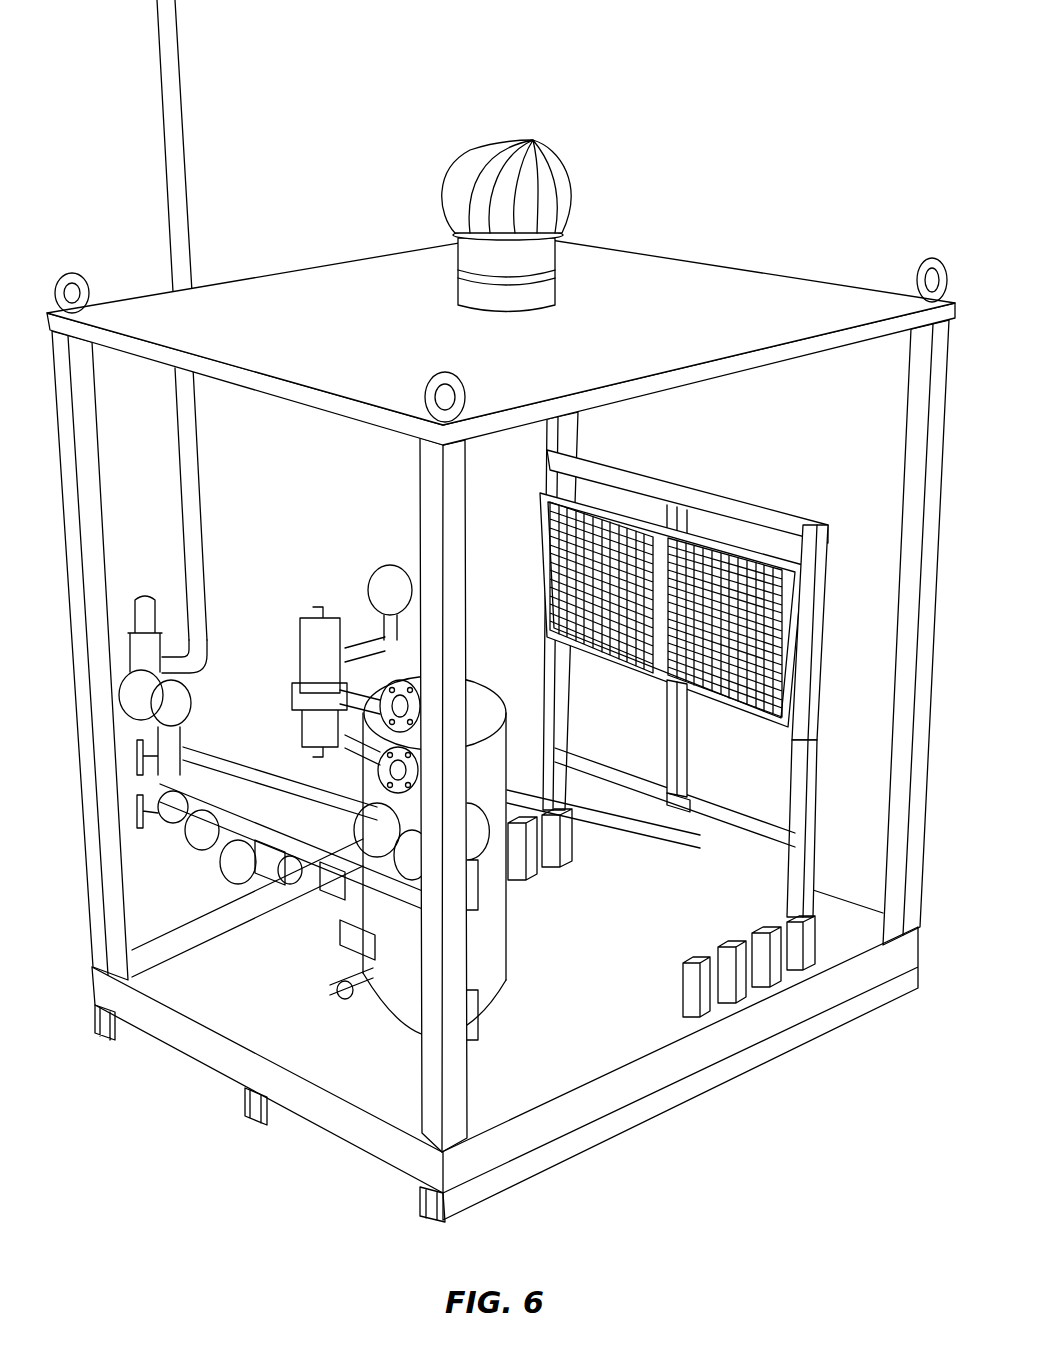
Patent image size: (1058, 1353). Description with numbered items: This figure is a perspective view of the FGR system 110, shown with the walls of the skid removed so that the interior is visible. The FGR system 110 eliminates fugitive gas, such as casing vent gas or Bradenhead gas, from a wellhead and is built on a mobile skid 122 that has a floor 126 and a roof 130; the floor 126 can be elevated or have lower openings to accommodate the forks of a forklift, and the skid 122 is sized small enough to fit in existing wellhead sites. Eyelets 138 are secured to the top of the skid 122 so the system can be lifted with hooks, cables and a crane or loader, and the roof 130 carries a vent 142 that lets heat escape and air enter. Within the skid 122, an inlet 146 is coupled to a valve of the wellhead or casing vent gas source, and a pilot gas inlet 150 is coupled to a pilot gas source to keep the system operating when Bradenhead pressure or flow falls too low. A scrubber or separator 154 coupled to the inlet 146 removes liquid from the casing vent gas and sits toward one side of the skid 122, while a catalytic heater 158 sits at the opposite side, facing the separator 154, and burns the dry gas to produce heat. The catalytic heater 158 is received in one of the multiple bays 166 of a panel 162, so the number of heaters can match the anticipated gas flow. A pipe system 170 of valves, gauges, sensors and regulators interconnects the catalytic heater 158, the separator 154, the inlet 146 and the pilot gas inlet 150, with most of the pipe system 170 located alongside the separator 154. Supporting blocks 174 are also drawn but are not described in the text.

The FGR system 110 is at (306, 1177).
The mobile skid 122 is at (800, 297).
The floor 126 is at (215, 1067).
The roof 130 is at (305, 298).
The eyelets 138 is at (70, 277).
The vent 142 is at (547, 173).
The inlet 146 is at (470, 1043).
The pilot gas inlet 150 is at (167, 840).
The separator 154 is at (483, 710).
The catalytic heater 158 is at (723, 563).
The panel 162 is at (815, 797).
The bays 166 is at (803, 620).
The pipe system 170 is at (277, 883).
The support blocks 174 is at (805, 975).